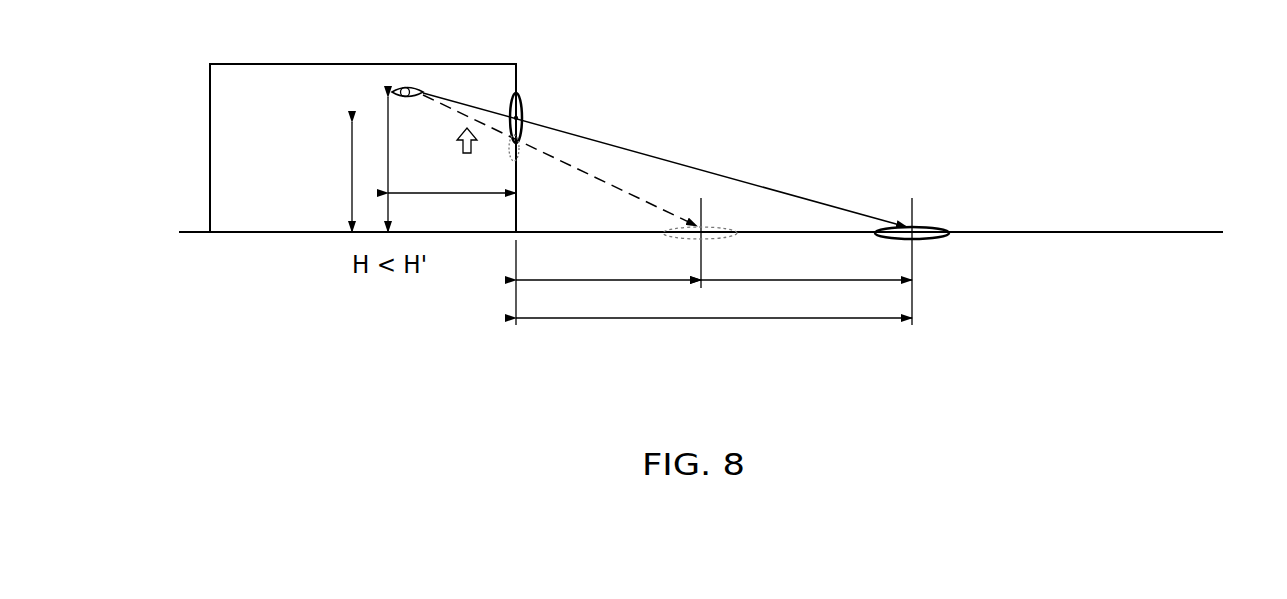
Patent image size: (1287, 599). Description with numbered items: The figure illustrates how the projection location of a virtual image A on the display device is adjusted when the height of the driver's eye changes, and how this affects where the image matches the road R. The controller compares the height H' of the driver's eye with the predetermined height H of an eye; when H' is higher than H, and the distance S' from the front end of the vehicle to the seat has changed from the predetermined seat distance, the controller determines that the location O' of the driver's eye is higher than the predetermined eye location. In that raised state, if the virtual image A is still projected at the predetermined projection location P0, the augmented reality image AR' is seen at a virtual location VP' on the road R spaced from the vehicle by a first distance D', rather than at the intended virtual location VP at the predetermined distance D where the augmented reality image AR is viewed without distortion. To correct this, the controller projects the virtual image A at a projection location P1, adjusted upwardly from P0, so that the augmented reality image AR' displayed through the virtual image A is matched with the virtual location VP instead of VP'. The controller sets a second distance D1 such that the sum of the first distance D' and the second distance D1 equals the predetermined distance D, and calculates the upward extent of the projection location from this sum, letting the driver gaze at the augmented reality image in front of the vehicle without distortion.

The virtual image A is at (513, 101).
The adjusted projection location P1 is at (521, 118).
The predetermined projection location P0 is at (519, 143).
The location of driver's eye O' is at (409, 110).
The virtual location VP' is at (735, 216).
The augmented reality image AR' is at (750, 202).
The augmented reality image AR is at (929, 215).
The virtual location VP is at (938, 261).
The road R is at (701, 248).
The predetermined height of eye H is at (342, 177).
The height of driver's eye H' is at (375, 164).
The distance from front end of vehicle to seat S' is at (452, 208).
The first distance D' is at (608, 295).
The second distance D1 is at (806, 296).
The predetermined distance D is at (714, 334).